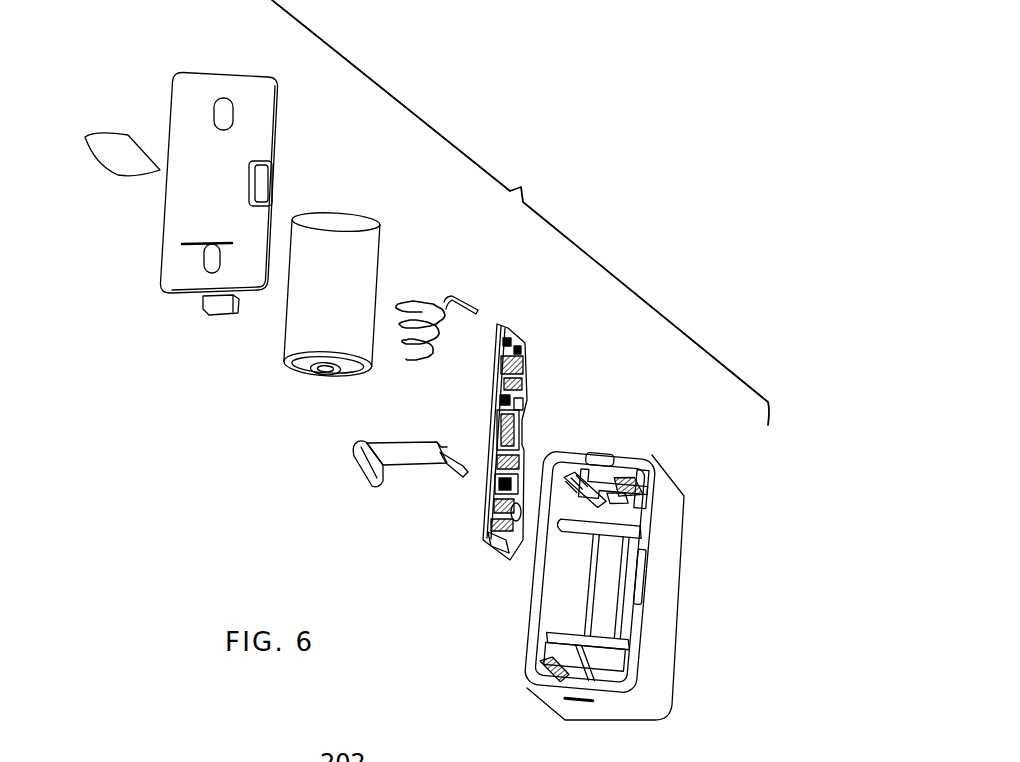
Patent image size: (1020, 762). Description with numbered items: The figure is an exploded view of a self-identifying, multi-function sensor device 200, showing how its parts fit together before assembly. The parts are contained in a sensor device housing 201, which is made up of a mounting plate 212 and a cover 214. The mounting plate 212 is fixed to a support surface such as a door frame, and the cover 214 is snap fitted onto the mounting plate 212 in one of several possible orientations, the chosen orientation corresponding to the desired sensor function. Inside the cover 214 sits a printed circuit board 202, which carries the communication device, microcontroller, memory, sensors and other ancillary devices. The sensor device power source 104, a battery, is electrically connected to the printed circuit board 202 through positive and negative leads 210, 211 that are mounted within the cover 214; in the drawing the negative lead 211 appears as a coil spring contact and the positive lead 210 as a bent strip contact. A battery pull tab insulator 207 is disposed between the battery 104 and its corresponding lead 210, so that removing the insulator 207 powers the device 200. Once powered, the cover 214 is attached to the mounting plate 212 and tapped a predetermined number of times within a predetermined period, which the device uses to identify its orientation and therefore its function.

The sensor device power source 104 is at (333, 212).
The sensor device 200 is at (520, 212).
The sensor device housing 201 is at (167, 277).
The printed circuit board 202 is at (519, 362).
The battery pull tab insulator 207 is at (118, 130).
The positive lead 210 is at (408, 458).
The negative lead 211 is at (442, 293).
The mounting plate 212 is at (219, 215).
The cover 214 is at (642, 597).